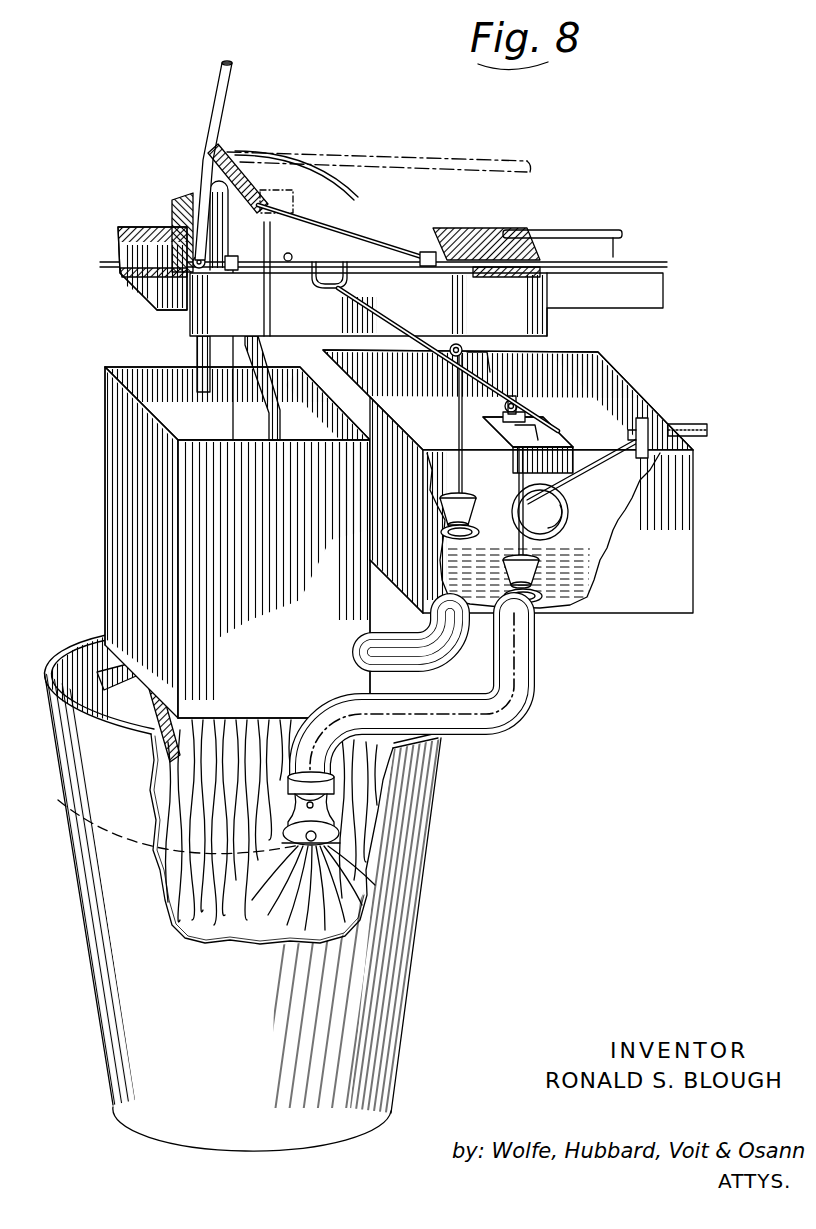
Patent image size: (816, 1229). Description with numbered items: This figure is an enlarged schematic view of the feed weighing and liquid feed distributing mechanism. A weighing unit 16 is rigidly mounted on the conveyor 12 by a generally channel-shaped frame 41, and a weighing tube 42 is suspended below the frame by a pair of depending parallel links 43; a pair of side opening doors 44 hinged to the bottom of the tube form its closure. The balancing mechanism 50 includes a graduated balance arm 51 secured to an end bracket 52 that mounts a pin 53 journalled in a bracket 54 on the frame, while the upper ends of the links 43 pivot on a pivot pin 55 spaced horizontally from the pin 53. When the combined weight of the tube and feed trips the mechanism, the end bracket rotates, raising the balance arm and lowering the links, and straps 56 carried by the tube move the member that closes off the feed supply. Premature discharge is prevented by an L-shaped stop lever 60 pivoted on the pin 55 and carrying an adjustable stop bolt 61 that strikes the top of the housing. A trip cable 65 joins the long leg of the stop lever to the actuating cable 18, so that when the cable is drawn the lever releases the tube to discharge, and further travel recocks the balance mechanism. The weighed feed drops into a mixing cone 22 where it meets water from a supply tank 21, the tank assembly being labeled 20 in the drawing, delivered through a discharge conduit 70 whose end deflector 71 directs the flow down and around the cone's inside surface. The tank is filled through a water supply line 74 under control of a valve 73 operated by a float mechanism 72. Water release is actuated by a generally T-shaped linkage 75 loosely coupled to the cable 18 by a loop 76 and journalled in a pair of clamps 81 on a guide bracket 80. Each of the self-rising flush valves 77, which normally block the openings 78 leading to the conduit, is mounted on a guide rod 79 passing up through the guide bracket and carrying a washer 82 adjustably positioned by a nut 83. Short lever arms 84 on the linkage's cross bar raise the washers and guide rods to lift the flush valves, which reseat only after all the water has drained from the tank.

The conveyor 12 is at (616, 228).
The weighing unit 16 is at (122, 352).
The actuating cable 18 is at (110, 256).
The valve housing 20 is at (641, 380).
The supply tank 21 is at (688, 542).
The mixing cone 22 is at (428, 893).
The channel-shaped frame 41 is at (492, 232).
The weighing tube 42 is at (118, 550).
The depending parallel links 43 is at (232, 395).
The side opening doors 44 is at (124, 672).
The balancing mechanism 50 is at (300, 140).
The graduated balance arm 51 is at (208, 102).
The end bracket 52 is at (264, 270).
The pin 53 is at (290, 255).
The bracket 54 is at (268, 210).
The pivot pin 55 is at (232, 272).
The straps 56 is at (197, 372).
The stop lever 60 is at (212, 228).
The adjustable stop bolt 61 is at (196, 270).
The trip cable 65 is at (362, 236).
The discharge conduit 70 is at (470, 645).
The end deflector 71 is at (328, 838).
The float mechanism 72 is at (560, 530).
The valve 73 is at (640, 412).
The water supply line 74 is at (698, 426).
The linkage 75 is at (398, 326).
The loop 76 is at (322, 278).
The flush valves 77 is at (470, 495).
The openings 78 is at (506, 592).
The guide rod 79 is at (458, 423).
The guide bracket 80 is at (458, 402).
The clamps 81 is at (490, 366).
The washers 82 is at (532, 412).
The nuts 83 is at (462, 342).
The lever arms 84 is at (512, 441).